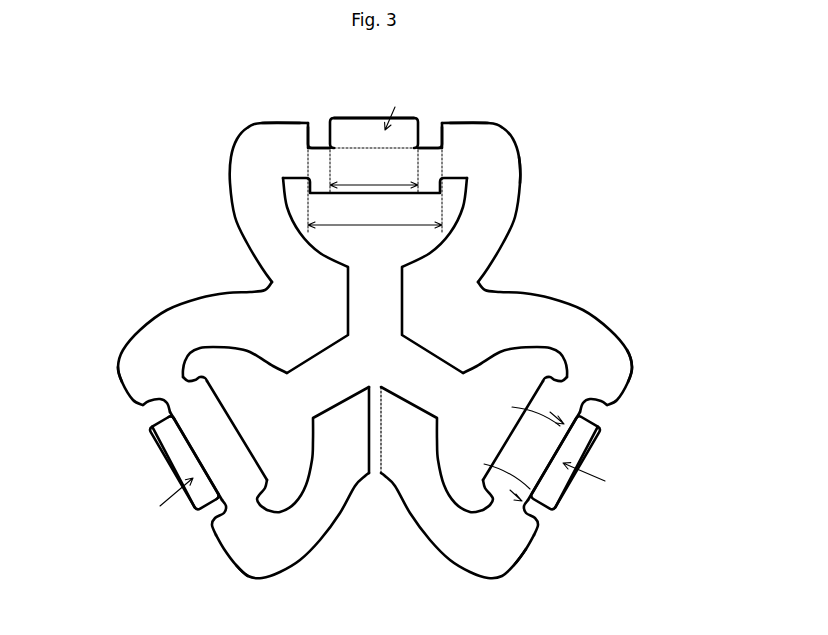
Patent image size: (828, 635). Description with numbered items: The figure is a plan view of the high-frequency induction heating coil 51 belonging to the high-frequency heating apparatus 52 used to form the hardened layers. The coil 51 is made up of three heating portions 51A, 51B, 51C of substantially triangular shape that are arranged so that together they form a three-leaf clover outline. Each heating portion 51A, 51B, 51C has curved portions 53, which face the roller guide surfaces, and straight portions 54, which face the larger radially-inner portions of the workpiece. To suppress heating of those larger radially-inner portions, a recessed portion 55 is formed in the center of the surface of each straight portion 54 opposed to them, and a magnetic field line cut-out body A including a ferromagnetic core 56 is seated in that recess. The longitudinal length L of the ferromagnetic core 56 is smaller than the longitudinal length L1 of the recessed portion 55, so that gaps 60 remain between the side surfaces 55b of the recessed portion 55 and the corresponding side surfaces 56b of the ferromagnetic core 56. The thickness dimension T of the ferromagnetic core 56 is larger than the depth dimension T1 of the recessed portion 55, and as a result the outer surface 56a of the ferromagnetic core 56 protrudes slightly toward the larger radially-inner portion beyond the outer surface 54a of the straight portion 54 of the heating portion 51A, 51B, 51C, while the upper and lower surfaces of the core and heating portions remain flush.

The high-frequency induction heating coil 51 is at (367, 340).
The heating portion 51A is at (608, 372).
The heating portion 51B is at (502, 175).
The heating portion 51C is at (248, 552).
The high-frequency heating apparatus 52 is at (367, 337).
The curved portion 53 is at (243, 187).
The straight portion 54 is at (346, 152).
The outer surface of the straight portion 54a is at (278, 122).
The recessed portion 55 is at (406, 143).
The side surface of the recessed portion 55b is at (153, 415).
The ferromagnetic core 56 is at (358, 109).
The outer surface of the ferromagnetic core 56a is at (385, 148).
The side surface of the ferromagnetic core 56b is at (198, 383).
The gap 60 is at (320, 137).
The longitudinal length of the ferromagnetic core L is at (374, 171).
The longitudinal length of the recessed portion L1 is at (375, 191).
The thickness dimension of the ferromagnetic core T is at (530, 410).
The depth dimension of the recessed portion T1 is at (491, 477).
The magnetic field line cut-out body A is at (381, 303).